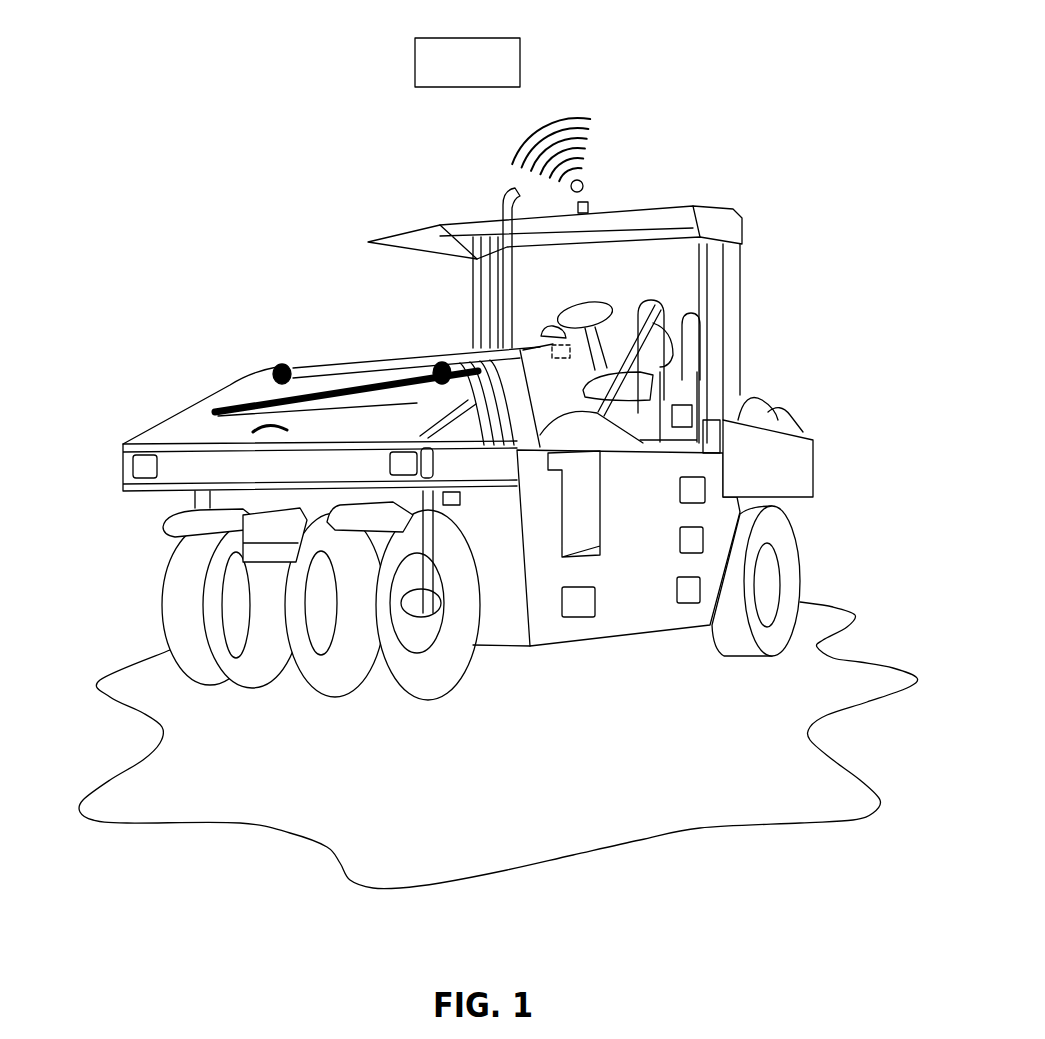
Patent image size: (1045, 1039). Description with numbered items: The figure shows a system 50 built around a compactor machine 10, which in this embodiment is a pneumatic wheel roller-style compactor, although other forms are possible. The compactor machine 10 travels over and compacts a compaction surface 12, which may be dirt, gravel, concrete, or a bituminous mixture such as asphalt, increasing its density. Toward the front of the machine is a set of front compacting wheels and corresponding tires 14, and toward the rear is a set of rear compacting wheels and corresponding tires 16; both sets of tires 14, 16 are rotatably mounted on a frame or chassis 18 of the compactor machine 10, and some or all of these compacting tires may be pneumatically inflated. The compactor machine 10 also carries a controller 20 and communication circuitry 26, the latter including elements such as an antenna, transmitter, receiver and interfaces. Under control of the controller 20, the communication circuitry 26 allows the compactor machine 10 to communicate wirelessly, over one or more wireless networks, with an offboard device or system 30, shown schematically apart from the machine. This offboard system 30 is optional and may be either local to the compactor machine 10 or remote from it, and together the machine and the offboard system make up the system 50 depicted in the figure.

The compactor machine 10 is at (469, 409).
The compaction surface 12 is at (828, 683).
The front compacting wheels and tires 14 is at (147, 577).
The rear compacting wheels and tires 16 is at (823, 572).
The frame 18 is at (801, 461).
The controller 20 is at (525, 343).
The communication circuitry 26 is at (590, 205).
The offboard system 30 is at (453, 79).
The system 50 is at (833, 103).